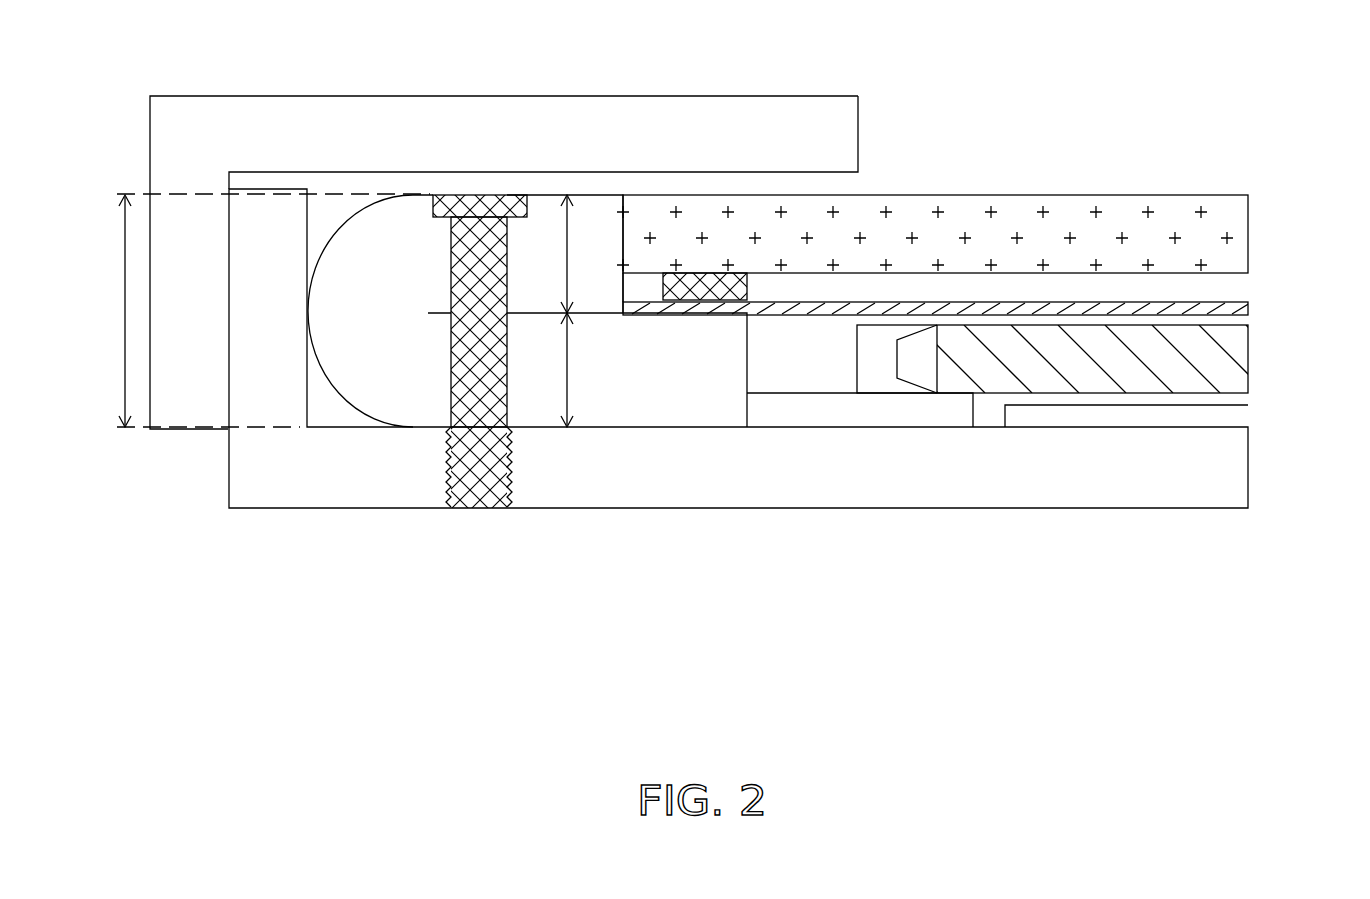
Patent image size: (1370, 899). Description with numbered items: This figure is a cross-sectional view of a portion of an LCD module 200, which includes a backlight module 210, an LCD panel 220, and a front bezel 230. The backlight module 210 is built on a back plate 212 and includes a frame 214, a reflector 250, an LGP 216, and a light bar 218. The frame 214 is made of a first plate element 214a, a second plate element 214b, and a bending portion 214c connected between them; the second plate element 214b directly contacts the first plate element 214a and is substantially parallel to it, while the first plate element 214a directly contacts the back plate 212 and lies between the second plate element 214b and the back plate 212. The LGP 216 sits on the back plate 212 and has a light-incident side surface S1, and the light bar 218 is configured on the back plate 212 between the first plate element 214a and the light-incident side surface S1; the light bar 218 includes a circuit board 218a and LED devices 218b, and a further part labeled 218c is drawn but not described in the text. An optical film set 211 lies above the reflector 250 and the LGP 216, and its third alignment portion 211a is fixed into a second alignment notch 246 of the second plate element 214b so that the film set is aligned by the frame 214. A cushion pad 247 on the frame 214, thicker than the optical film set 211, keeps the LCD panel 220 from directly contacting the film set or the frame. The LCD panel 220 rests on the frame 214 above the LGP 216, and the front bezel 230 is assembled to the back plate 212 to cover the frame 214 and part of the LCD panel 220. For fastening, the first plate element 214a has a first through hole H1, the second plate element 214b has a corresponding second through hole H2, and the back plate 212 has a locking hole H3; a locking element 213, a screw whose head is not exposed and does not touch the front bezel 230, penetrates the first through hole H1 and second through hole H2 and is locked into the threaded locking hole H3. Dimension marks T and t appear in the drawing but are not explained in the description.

The LCD module 200 is at (1240, 576).
The backlight module 210 is at (1310, 302).
The optical film set 211 is at (1240, 306).
The third alignment portion 211a is at (711, 313).
The back plate 212 is at (262, 485).
The locking element 213 is at (470, 372).
The frame 214 is at (623, 585).
The first plate element 214a is at (605, 410).
The second plate element 214b is at (553, 290).
The bending portion 214c is at (403, 400).
The LGP 216 is at (1232, 362).
The light bar 218 is at (893, 568).
The circuit board 218a is at (887, 412).
The LED devices 218b is at (913, 370).
The third part of supporting element 218c is at (765, 410).
The LCD panel 220 is at (1228, 216).
The front bezel 230 is at (168, 147).
The second alignment notch 246 is at (830, 292).
The cushion pad 247 is at (708, 292).
The reflector 250 is at (1133, 413).
The light-incident side surface S1 is at (925, 365).
The first through hole H1 is at (462, 240).
The second through hole H2 is at (462, 338).
The locking hole H3 is at (461, 439).
The total thickness T is at (113, 311).
The thickness t is at (573, 311).